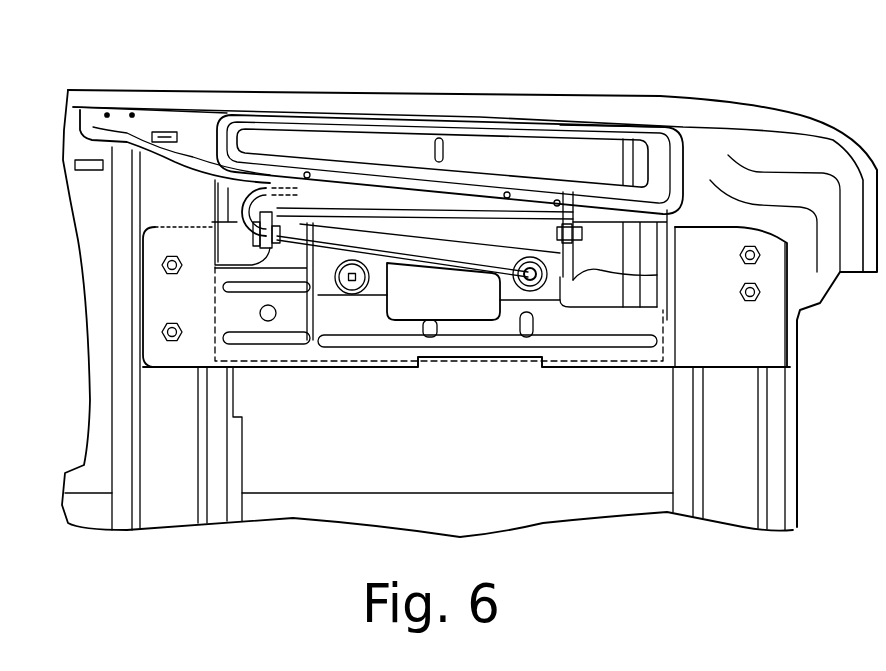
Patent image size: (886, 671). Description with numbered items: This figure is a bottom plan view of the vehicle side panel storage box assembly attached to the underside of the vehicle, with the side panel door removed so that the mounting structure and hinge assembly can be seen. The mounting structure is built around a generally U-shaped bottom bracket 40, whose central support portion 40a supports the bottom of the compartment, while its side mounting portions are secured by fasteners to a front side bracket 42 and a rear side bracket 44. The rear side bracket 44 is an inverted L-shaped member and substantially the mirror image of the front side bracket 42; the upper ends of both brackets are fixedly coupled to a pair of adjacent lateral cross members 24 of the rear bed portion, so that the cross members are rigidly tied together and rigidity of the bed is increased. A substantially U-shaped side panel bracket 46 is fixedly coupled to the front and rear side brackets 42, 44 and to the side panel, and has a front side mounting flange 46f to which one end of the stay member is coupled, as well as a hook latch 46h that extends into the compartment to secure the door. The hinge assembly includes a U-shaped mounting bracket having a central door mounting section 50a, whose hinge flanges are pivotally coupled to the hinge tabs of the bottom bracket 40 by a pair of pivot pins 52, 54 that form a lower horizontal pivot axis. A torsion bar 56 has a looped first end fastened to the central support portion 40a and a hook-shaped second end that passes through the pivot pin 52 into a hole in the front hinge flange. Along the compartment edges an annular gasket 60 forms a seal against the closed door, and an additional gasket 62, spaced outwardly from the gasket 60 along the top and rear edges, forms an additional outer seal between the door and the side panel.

The lateral cross member 24 is at (167, 502).
The bottom bracket 40 is at (578, 375).
The central support portion 40a is at (323, 353).
The front side bracket 42 is at (168, 292).
The rear side bracket 44 is at (740, 353).
The side panel bracket 46 is at (160, 165).
The front side mounting flange 46f is at (190, 122).
The hook latch 46h is at (440, 160).
The central door mounting section 50a is at (474, 190).
The pivot pin 52 is at (283, 208).
The pivot pin 54 is at (577, 232).
The torsion bar 56 is at (342, 243).
The gasket 60 is at (583, 124).
The additional gasket 62 is at (663, 113).